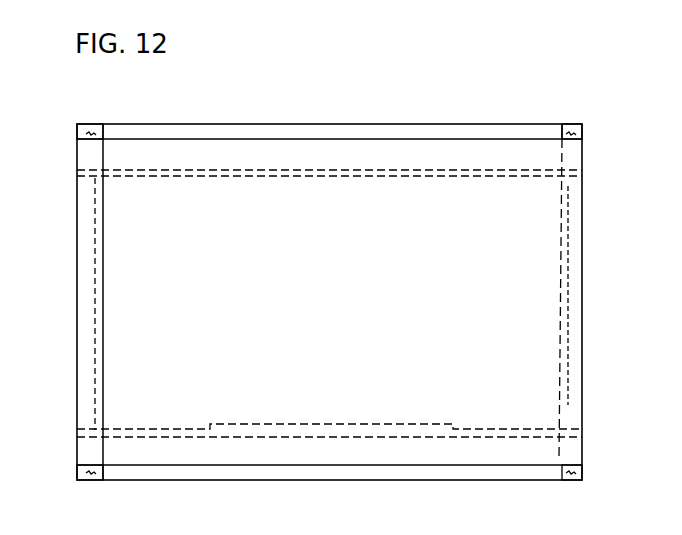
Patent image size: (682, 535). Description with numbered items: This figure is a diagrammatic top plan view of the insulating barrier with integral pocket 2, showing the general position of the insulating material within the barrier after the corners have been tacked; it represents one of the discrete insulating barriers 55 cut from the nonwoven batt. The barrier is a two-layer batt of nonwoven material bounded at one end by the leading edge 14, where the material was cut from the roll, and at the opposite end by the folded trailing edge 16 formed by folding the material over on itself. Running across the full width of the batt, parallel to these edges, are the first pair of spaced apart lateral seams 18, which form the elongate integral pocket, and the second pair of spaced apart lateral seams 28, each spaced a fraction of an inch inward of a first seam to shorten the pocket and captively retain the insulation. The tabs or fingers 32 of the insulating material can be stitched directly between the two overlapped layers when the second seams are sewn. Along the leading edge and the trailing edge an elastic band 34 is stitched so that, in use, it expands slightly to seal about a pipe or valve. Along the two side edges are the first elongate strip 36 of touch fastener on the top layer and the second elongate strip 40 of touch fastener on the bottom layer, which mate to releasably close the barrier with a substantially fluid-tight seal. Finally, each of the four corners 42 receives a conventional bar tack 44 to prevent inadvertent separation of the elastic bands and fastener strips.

The insulating barrier with integral pocket 2 is at (329, 251).
The insulating barrier 55 is at (329, 302).
The leading edge 14 is at (362, 482).
The folded trailing edge 16 is at (320, 123).
The first pair of spaced apart lateral seams 18 is at (287, 430).
The second pair of spaced apart lateral seams 28 is at (313, 440).
The tabs or fingers 32 is at (457, 175).
The elastic band 34 is at (245, 132).
The first elongate strip of releasable/resealable touch fastener 36 is at (85, 313).
The second elongate strip of releasable/resealable touch fastener 40 is at (573, 243).
The corners 42 is at (77, 128).
The bar tack 44 is at (93, 132).